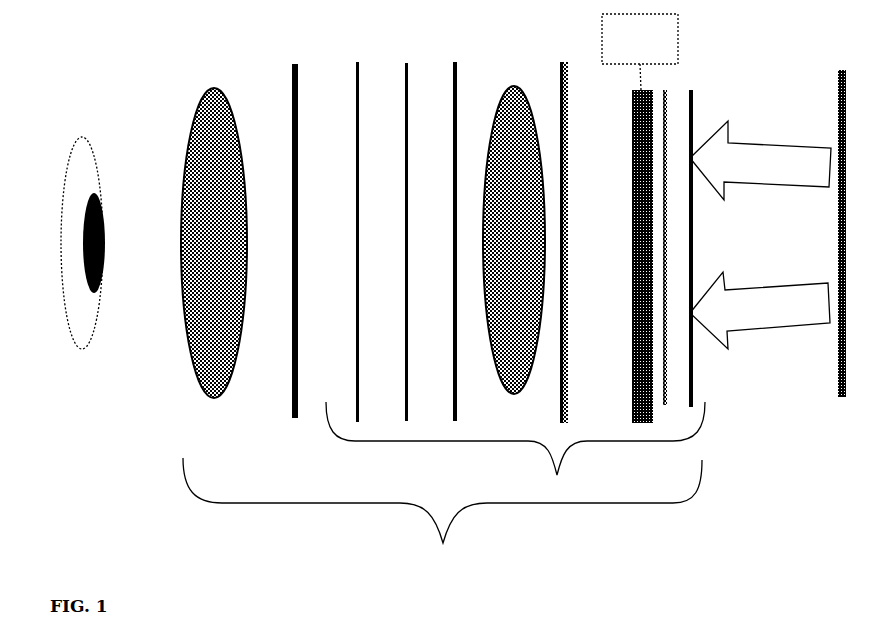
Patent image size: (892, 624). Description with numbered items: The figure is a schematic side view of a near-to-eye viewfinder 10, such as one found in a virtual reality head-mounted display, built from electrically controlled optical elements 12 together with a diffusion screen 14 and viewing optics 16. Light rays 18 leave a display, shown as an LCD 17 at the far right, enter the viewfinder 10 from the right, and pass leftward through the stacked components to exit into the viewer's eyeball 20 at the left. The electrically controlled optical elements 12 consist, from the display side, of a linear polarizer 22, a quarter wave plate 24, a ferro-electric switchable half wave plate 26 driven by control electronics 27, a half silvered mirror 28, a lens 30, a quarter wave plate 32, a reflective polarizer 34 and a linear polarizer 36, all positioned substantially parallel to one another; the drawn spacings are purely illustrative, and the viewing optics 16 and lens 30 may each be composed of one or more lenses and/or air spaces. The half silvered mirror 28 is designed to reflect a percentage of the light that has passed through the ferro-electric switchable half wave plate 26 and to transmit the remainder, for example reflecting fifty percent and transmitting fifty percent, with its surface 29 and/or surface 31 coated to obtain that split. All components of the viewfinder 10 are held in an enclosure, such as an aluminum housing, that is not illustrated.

The viewfinder 10 is at (442, 514).
The electrically controlled optical elements 12 is at (515, 451).
The diffusion screen 14 is at (291, 80).
The viewing optics 16 is at (212, 86).
The LCD 17 is at (831, 399).
The light rays 18 is at (803, 278).
The viewer's eyeball 20 is at (71, 139).
The linear polarizer 22 is at (694, 367).
The quarter wave plate 24 is at (668, 393).
The ferro-electric switchable half wave plate 26 is at (651, 420).
The control electronics 27 is at (682, 42).
The half silvered mirror 28 is at (559, 74).
The surface 29 is at (569, 397).
The lens 30 is at (511, 85).
The surface 31 is at (558, 393).
The quarter wave plate 32 is at (452, 80).
The reflective polarizer 34 is at (404, 76).
The linear polarizer 36 is at (355, 82).